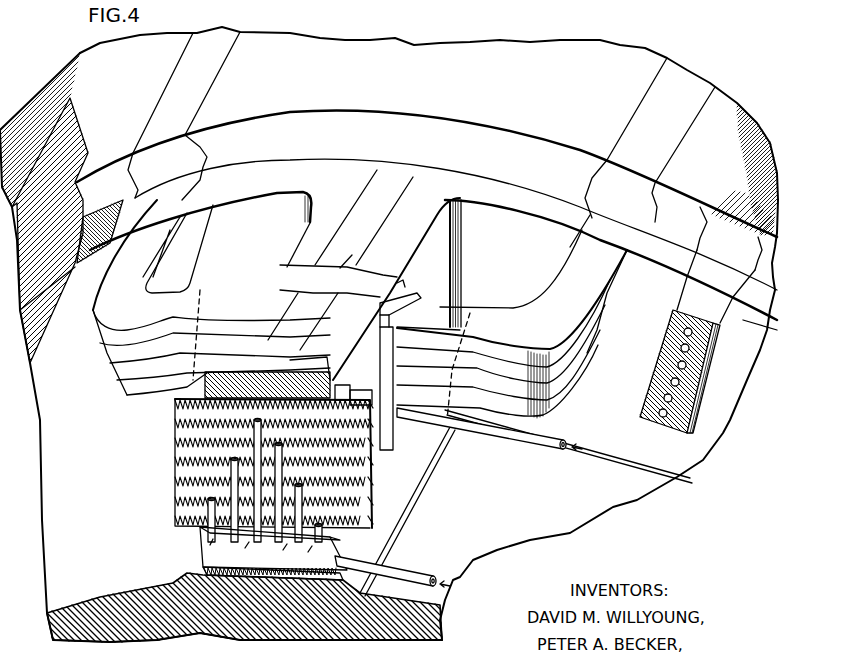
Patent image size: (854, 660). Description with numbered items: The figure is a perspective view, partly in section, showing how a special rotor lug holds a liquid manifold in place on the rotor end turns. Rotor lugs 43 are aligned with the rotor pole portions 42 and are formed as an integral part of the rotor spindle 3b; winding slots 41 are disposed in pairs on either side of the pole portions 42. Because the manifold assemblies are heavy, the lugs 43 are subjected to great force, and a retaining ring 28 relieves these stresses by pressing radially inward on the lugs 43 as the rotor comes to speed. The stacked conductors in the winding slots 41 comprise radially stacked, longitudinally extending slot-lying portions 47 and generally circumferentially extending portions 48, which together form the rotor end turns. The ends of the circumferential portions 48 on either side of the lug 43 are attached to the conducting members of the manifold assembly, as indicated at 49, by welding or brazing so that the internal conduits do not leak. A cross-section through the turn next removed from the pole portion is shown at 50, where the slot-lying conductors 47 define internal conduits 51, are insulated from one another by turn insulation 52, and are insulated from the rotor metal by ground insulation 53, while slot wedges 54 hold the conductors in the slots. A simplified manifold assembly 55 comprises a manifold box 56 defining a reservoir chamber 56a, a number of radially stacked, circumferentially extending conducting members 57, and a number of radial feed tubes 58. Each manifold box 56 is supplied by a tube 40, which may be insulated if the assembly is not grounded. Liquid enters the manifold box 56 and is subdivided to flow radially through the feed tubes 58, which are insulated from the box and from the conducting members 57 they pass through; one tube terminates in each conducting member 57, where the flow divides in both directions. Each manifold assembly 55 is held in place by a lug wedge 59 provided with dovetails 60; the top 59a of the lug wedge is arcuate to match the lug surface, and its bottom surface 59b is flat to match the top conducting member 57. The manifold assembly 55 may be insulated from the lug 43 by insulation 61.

The rotor spindle 3b is at (100, 600).
The retaining ring 28 is at (73, 125).
The tube 40 is at (523, 440).
The winding slots 41 is at (195, 270).
The rotor pole portions 42 is at (445, 2).
The rotor lug 43 is at (413, 222).
The slot-lying portions 47 is at (173, 262).
The circumferentially extending portions 48 is at (487, 350).
The joint 49 is at (470, 313).
The cross-section of conductors 50 is at (664, 448).
The internal conduits 51 is at (695, 390).
The turn insulation 52 is at (703, 345).
The ground insulation 53 is at (663, 348).
The slot wedges 54 is at (705, 220).
The manifold assembly 55 is at (160, 395).
The manifold box 56 is at (200, 548).
The reservoir chamber 56a is at (250, 561).
The conducting members 57 is at (222, 372).
The radial feed tubes 58 is at (300, 576).
The lug wedge 59 is at (372, 273).
The top of lug wedge 59a is at (340, 268).
The bottom surface of lug wedge 59b is at (405, 300).
The dovetails 60 is at (405, 283).
The insulation 61 is at (408, 315).